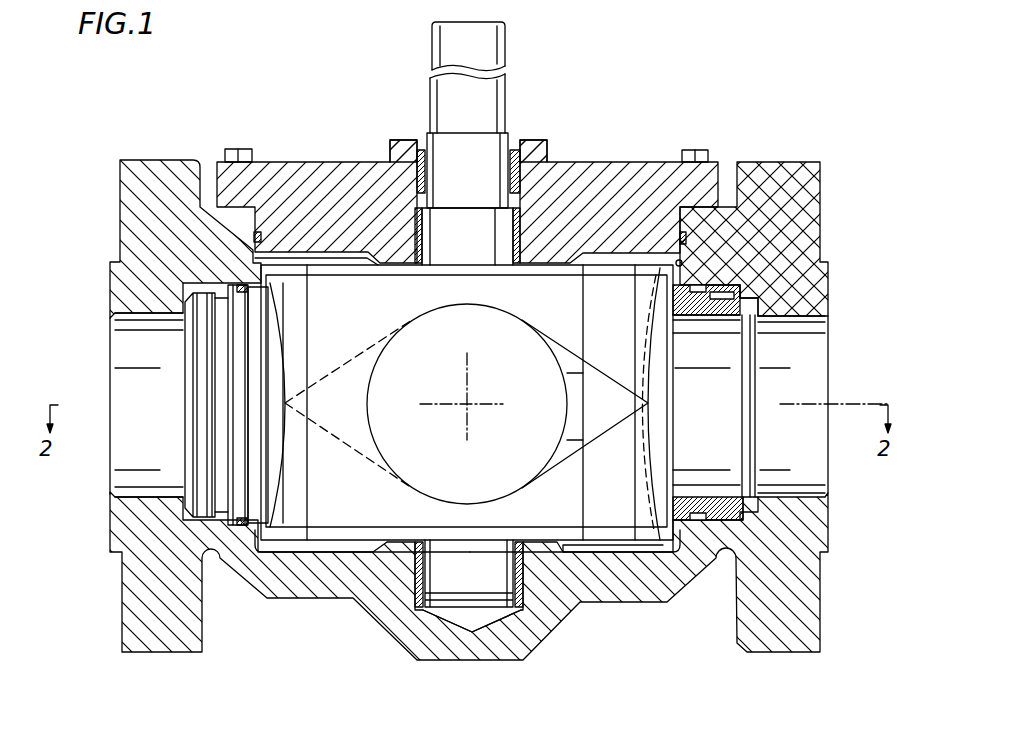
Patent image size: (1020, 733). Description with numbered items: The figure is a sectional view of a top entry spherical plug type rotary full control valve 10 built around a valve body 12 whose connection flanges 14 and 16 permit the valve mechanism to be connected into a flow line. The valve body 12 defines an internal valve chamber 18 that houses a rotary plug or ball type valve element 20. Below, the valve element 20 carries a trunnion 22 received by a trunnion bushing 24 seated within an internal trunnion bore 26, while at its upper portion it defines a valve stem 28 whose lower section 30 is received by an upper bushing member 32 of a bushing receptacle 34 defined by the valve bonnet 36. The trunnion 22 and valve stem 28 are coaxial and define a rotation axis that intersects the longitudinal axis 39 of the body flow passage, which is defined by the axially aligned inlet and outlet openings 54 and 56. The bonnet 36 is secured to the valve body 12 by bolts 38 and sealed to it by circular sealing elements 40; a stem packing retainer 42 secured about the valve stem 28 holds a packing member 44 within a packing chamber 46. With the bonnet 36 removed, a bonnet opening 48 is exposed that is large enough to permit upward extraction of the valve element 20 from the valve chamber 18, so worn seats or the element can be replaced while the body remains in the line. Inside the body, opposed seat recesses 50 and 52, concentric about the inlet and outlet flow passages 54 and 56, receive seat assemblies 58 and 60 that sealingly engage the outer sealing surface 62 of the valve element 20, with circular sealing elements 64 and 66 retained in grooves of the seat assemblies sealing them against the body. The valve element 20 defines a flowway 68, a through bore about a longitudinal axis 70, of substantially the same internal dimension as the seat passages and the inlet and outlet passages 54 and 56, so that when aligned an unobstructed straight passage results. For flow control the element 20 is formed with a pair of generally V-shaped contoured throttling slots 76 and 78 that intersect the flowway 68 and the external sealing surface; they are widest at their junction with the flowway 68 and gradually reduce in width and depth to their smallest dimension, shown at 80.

The rotary flow control valve 10 is at (667, 52).
The valve body 12 is at (333, 600).
The connection flange 14 is at (138, 613).
The connection flange 16 is at (807, 617).
The internal valve chamber 18 is at (607, 547).
The valve element 20 is at (317, 540).
The trunnion 22 is at (447, 580).
The trunnion bushing 24 is at (415, 585).
The internal trunnion bore 26 is at (507, 577).
The valve stem 28 is at (503, 33).
The lower section of the valve stem 30 is at (502, 230).
The upper bushing member 32 is at (528, 252).
The bushing receptacle 34 is at (435, 247).
The valve bonnet 36 is at (294, 177).
The bolts 38 is at (242, 148).
The longitudinal axis of the flow passage 39 is at (808, 402).
The circular sealing elements 40 is at (680, 237).
The stem packing retainer 42 is at (530, 142).
The packing member 44 is at (523, 182).
The packing chamber 46 is at (430, 167).
The bonnet opening 48 is at (683, 265).
The internal seat recess 50 is at (212, 330).
The internal seat recess 52 is at (725, 287).
The inlet flow passage 54 is at (140, 485).
The outlet flow passage 56 is at (800, 495).
The seat assembly 58 is at (205, 300).
The seat assembly 60 is at (728, 327).
The outer sealing surface 62 is at (340, 287).
The circular sealing element 64 is at (243, 525).
The circular sealing element 66 is at (700, 523).
The flowway 68 is at (527, 487).
The longitudinal axis of the flowway 70 is at (470, 397).
The throttling slot 76 is at (603, 420).
The throttling slot 78 is at (350, 368).
The smallest dimension of throttling slot 80 is at (653, 401).